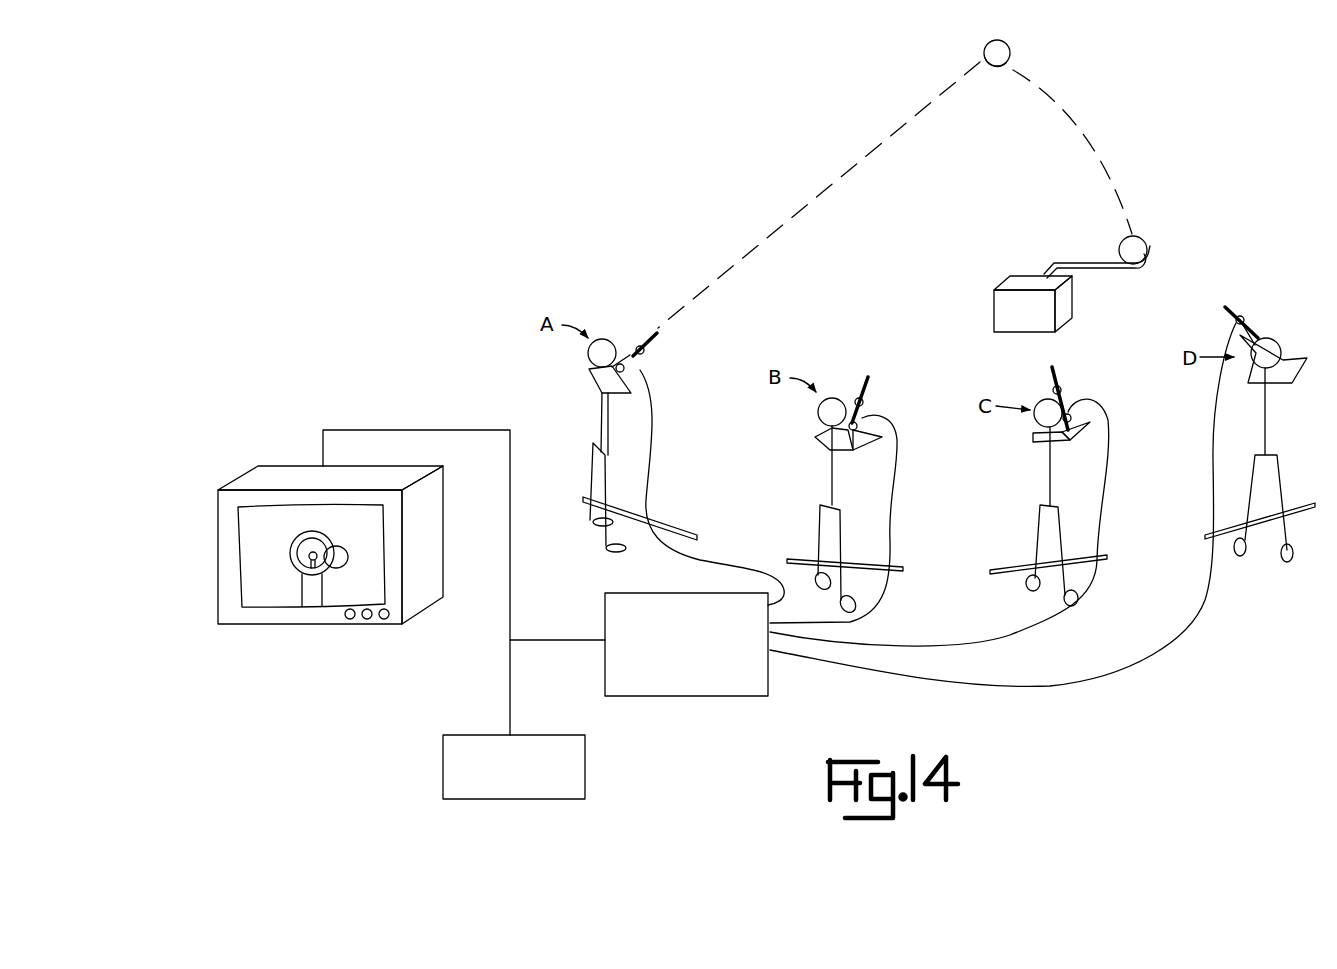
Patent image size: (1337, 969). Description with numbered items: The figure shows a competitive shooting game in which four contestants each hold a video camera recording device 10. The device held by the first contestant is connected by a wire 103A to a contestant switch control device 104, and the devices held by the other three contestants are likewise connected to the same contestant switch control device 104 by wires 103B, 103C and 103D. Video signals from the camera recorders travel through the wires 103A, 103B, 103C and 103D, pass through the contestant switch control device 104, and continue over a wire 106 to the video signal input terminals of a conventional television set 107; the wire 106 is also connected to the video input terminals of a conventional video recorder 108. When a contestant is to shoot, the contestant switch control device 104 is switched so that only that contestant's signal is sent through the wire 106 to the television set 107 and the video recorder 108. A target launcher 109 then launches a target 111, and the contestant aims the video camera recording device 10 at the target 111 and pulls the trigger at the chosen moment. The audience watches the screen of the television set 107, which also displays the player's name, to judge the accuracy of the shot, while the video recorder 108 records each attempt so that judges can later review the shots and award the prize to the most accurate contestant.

The video camera recording device 10 is at (647, 335).
The wire 103A is at (655, 450).
The wire 103B is at (893, 508).
The wire 103C is at (1097, 510).
The wire 103D is at (1212, 452).
The contestant switch control device 104 is at (712, 697).
The wire 106 is at (570, 636).
The television set 107 is at (291, 476).
The video recorder 108 is at (573, 752).
The target launcher 109 is at (1018, 303).
The target 111 is at (1000, 53).